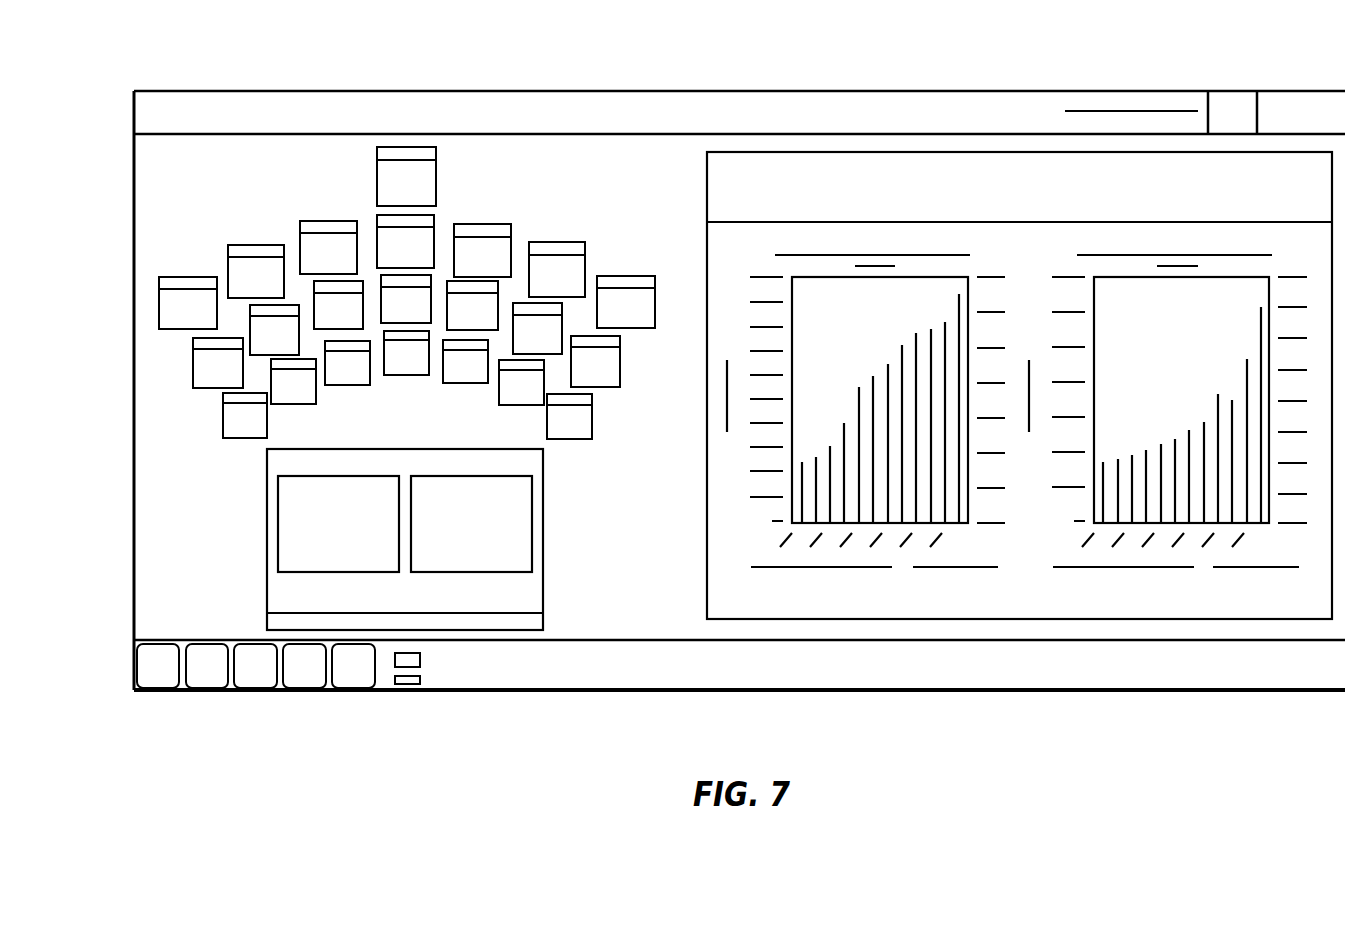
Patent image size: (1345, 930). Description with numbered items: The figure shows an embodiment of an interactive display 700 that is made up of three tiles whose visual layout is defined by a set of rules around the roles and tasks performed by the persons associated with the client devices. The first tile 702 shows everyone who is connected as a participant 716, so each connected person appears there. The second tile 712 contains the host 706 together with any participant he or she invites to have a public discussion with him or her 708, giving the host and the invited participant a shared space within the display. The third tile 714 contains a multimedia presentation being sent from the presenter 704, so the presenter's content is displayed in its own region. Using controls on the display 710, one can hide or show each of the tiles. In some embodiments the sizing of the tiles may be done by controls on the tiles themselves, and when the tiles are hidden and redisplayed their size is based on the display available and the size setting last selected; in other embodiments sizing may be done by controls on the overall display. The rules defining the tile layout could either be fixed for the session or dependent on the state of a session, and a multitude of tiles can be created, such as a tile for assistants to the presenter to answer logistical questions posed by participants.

The interactive display 700 is at (629, 90).
The first tile 702 is at (147, 360).
The presenter 704 is at (1230, 163).
The host 706 is at (305, 499).
The invited participant 708 is at (522, 500).
The controls on the display 710 is at (497, 697).
The second tile 712 is at (545, 555).
The third tile 714 is at (1180, 595).
The participant 716 is at (172, 302).